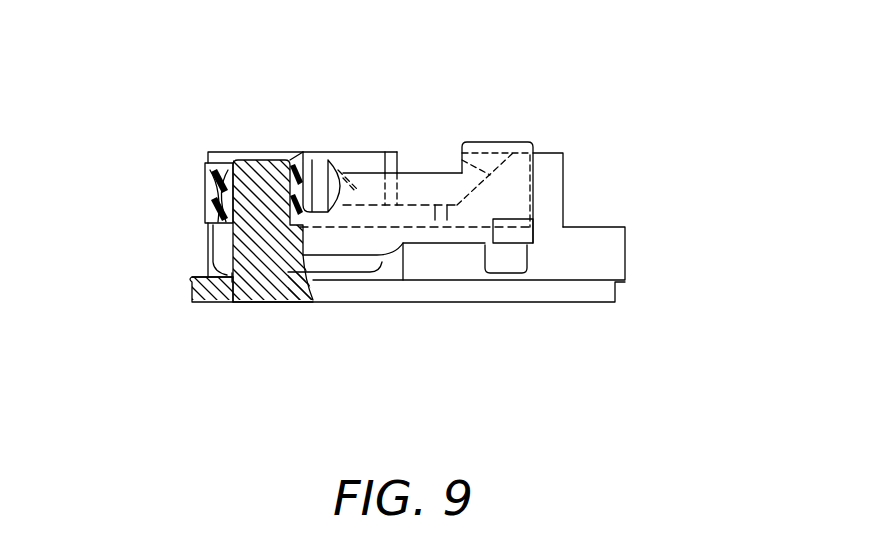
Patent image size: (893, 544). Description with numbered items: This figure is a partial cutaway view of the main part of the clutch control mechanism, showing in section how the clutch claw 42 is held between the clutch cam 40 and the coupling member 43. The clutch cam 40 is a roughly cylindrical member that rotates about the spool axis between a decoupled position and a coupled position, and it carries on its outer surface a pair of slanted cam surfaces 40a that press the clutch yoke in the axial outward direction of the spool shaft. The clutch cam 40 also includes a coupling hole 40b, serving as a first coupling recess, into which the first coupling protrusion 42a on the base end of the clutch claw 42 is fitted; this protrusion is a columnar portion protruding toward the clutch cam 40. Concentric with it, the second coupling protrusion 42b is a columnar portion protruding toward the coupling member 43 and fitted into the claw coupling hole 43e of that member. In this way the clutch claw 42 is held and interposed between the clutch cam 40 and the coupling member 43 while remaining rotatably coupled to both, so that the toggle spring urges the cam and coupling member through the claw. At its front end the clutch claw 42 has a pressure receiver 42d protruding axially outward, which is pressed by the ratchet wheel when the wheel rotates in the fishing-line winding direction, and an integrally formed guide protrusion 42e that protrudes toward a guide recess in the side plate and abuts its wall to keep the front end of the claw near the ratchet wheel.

The clutch cam 40 is at (298, 143).
The cam surfaces 40a is at (320, 162).
The coupling hole 40b is at (222, 214).
The clutch claw 42 is at (430, 162).
The first coupling protrusion 42a is at (248, 185).
The second coupling protrusion 42b is at (262, 292).
The pressure receiver 42d is at (495, 148).
The guide protrusion 42e is at (513, 262).
The coupling member 43 is at (392, 318).
The claw coupling hole 43e is at (240, 278).